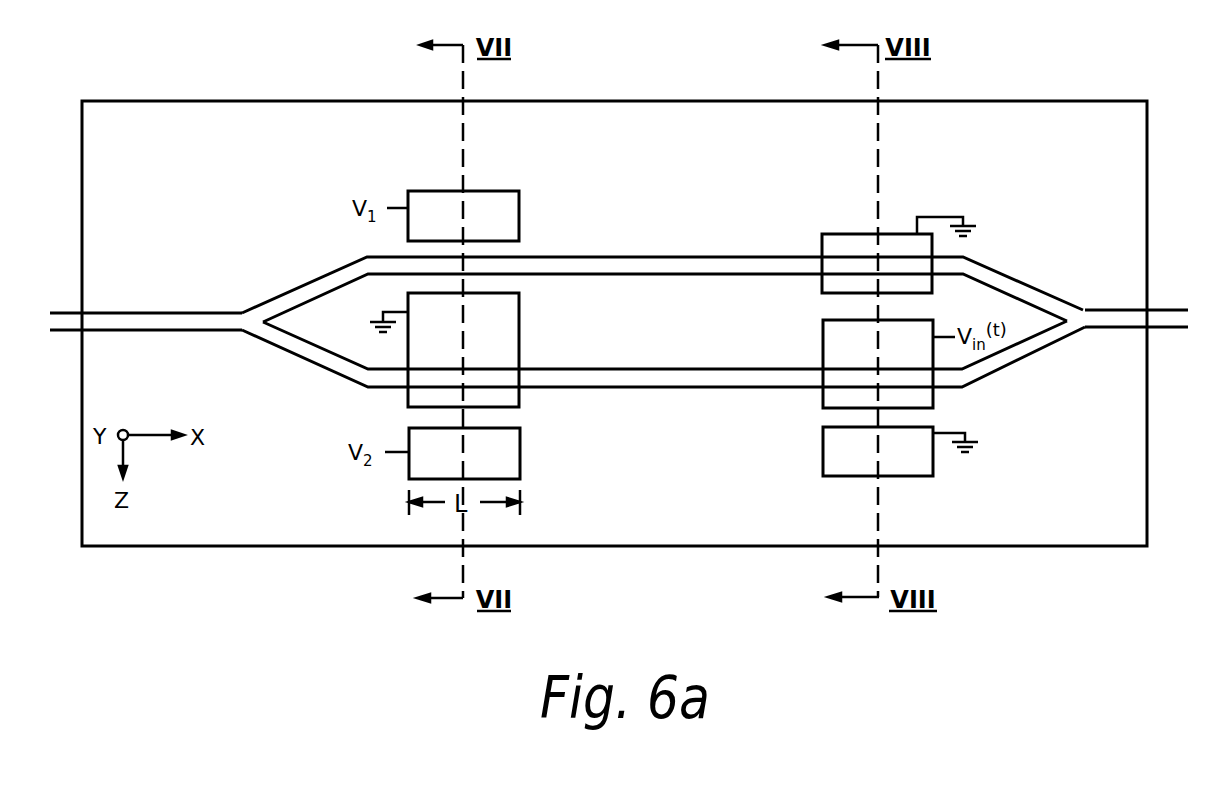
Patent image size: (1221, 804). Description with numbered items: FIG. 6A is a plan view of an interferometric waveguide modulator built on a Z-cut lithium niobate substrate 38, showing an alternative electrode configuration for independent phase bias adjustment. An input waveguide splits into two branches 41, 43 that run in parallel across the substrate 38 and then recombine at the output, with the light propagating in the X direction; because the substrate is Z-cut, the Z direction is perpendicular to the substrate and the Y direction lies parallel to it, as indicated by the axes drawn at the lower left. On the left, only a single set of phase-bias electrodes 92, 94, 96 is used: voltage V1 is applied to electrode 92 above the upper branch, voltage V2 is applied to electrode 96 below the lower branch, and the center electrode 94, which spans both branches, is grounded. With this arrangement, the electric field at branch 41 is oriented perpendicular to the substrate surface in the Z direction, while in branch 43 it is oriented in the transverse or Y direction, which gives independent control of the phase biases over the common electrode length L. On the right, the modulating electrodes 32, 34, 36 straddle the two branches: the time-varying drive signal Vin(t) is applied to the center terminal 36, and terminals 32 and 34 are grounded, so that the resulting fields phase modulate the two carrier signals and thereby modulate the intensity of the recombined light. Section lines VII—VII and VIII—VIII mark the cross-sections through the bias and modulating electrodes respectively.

The lithium niobate substrate 38 is at (1147, 171).
The branch 43 is at (295, 288).
The branch 41 is at (311, 364).
The electrode 92 is at (487, 191).
The electrode 94 is at (519, 318).
The electrode 96 is at (520, 445).
The grounded terminal electrode 32 is at (852, 234).
The terminal electrode 36 is at (822, 345).
The grounded terminal electrode 34 is at (895, 476).